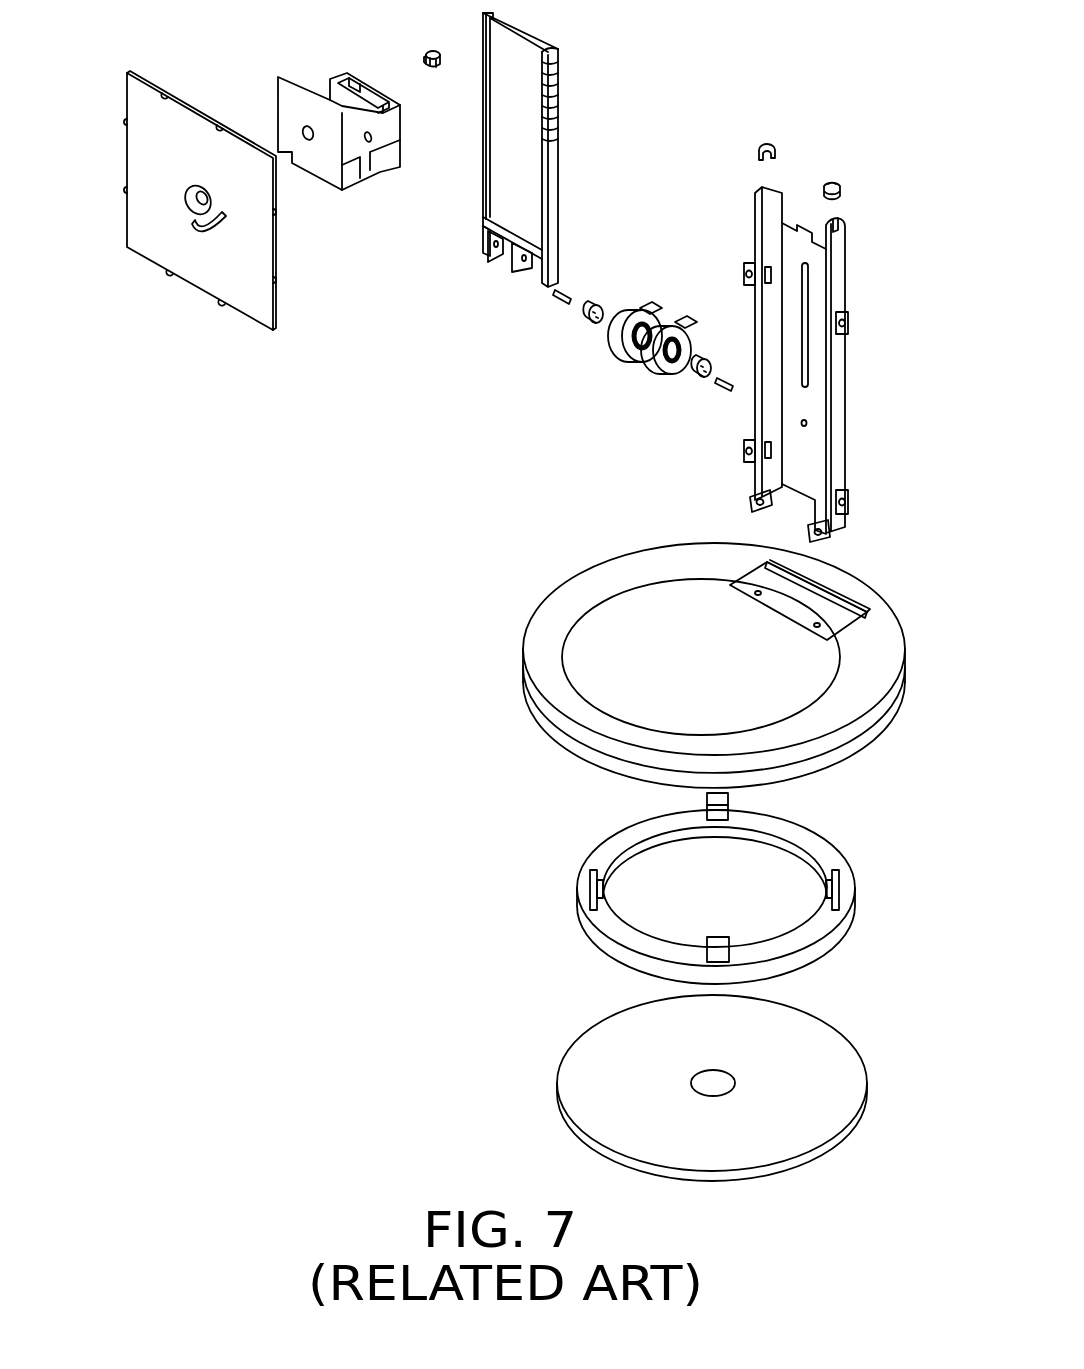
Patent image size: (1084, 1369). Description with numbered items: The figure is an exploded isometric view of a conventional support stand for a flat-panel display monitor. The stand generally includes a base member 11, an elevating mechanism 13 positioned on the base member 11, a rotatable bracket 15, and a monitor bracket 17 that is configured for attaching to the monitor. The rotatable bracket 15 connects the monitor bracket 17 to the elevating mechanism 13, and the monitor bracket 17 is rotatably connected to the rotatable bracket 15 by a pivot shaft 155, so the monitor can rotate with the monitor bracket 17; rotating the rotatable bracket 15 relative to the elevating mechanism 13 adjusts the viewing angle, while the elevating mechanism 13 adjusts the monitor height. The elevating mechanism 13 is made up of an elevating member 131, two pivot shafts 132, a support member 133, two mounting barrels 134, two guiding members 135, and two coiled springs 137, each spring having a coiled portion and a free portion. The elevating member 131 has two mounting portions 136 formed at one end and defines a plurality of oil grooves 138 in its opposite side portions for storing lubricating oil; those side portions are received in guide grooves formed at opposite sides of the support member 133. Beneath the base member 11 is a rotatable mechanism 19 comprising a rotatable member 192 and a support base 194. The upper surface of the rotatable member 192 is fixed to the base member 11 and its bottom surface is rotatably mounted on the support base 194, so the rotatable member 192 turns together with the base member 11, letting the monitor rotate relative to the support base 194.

The base member 11 is at (555, 690).
The elevating mechanism 13 is at (500, 382).
The rotatable bracket 15 is at (318, 172).
The monitor bracket 17 is at (152, 232).
The rotatable mechanism 19 is at (467, 963).
The elevating member 131 is at (536, 150).
The pivot shafts 132 is at (720, 387).
The support member 133 is at (833, 428).
The mounting barrels 134 is at (694, 373).
The guiding members 135 is at (777, 140).
The mounting portions 136 is at (495, 248).
The coiled springs 137 is at (653, 352).
The oil grooves 138 is at (560, 105).
The pivot shaft 155 is at (428, 54).
The rotatable member 192 is at (610, 948).
The support base 194 is at (578, 1072).